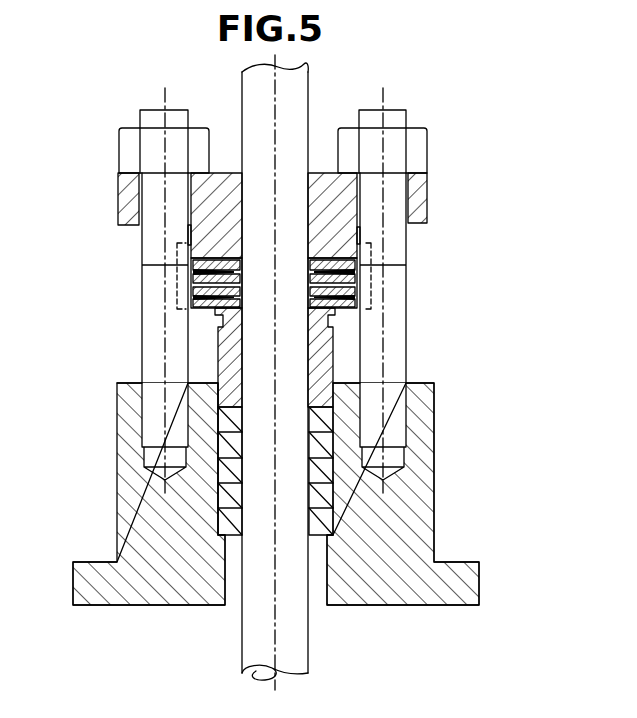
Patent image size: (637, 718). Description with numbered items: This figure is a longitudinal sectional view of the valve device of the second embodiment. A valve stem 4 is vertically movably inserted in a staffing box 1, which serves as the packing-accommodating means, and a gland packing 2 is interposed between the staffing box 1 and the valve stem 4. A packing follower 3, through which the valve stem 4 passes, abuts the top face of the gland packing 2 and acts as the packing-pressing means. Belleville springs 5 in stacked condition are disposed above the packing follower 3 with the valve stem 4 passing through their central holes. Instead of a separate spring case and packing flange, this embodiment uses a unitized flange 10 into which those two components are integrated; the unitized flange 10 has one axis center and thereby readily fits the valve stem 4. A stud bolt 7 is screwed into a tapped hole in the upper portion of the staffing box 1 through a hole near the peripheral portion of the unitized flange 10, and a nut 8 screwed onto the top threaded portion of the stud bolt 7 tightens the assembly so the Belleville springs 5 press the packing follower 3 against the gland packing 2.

The staffing box 1 is at (434, 465).
The gland packing 2 is at (223, 525).
The packing follower 3 is at (330, 363).
The valve stem 4 is at (308, 86).
The Belleville springs 5 is at (208, 305).
The stud bolt 7 is at (402, 323).
The nut 8 is at (422, 152).
The unitized flange 10 is at (427, 197).